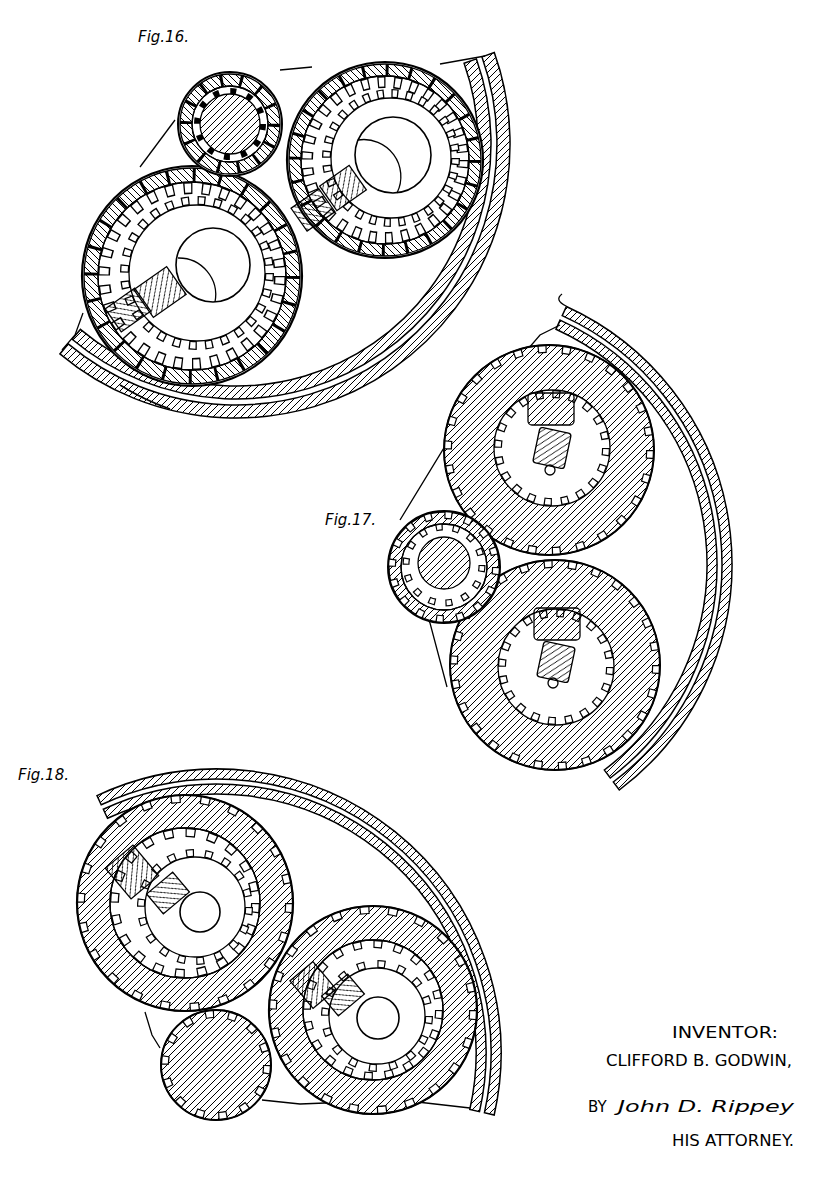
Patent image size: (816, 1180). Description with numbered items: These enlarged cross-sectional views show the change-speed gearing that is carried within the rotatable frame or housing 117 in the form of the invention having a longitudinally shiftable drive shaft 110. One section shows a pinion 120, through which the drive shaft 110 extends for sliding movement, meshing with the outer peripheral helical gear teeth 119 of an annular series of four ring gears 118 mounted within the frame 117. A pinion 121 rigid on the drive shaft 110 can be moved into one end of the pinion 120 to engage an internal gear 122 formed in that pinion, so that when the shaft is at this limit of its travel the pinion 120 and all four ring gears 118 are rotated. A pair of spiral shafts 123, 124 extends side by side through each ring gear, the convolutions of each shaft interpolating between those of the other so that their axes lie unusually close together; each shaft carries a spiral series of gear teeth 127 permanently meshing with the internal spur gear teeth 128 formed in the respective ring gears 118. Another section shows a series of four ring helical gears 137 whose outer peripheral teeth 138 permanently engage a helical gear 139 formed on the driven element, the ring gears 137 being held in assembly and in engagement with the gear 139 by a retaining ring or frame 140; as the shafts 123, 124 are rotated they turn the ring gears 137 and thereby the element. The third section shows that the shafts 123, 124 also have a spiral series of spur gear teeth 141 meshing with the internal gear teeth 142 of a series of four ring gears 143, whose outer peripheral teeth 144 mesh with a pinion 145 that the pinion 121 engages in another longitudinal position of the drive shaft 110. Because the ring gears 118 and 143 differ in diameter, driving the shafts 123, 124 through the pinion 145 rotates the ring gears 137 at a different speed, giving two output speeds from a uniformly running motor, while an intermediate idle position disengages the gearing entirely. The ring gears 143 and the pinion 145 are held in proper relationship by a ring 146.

In FIG. 17, the drive shaft 110 is at (405, 583).
In FIG. 16, the rotatable frame or housing 117 is at (511, 98).
In FIG. 17, the rotatable frame or housing 117 is at (730, 547).
In FIG. 18, the rotatable frame or housing 117 is at (373, 817).
In FIG. 17, the ring gears 118 is at (653, 422).
In FIG. 17, the outer peripheral helical gear teeth 119 is at (660, 448).
In FIG. 17, the pinion 120 is at (420, 600).
In FIG. 16, the pinion 121 is at (237, 95).
In FIG. 16, the internal gear 122 is at (207, 127).
In FIG. 17, the internal gear 122 is at (410, 565).
In FIG. 16, the spiral shaft 123 is at (163, 320).
In FIG. 17, the spiral shaft 123 is at (530, 418).
In FIG. 18, the spiral shaft 123 is at (183, 883).
In FIG. 16, the spiral shaft 124 is at (113, 312).
In FIG. 17, the spiral shaft 124 is at (554, 568).
In FIG. 18, the spiral shaft 124 is at (118, 875).
In FIG. 17, the spiral series of gear teeth 127 is at (560, 408).
In FIG. 17, the internal spur gear teeth 128 is at (597, 483).
In FIG. 18, the ring helical gears 137 is at (100, 858).
In FIG. 18, the outer peripheral teeth 138 is at (77, 887).
In FIG. 18, the helical gear 139 is at (185, 1070).
In FIG. 18, the retaining ring or frame 140 is at (437, 875).
In FIG. 16, the spiral series of spur gear teeth 141 is at (136, 200).
In FIG. 16, the internal gear teeth 142 is at (187, 398).
In FIG. 16, the ring gears 143 is at (388, 67).
In FIG. 16, the outer peripheral teeth 144 is at (110, 214).
In FIG. 16, the pinion 145 is at (187, 105).
In FIG. 16, the ring 146 is at (487, 58).